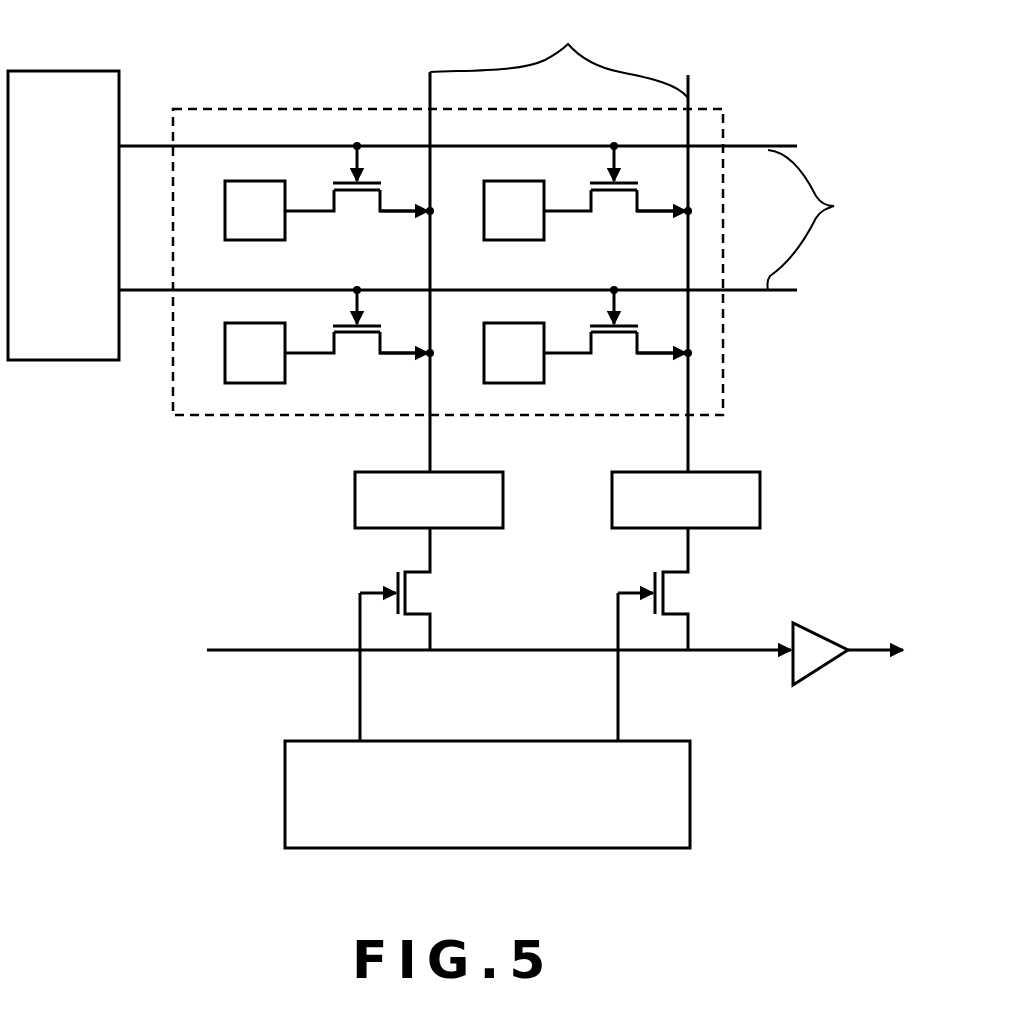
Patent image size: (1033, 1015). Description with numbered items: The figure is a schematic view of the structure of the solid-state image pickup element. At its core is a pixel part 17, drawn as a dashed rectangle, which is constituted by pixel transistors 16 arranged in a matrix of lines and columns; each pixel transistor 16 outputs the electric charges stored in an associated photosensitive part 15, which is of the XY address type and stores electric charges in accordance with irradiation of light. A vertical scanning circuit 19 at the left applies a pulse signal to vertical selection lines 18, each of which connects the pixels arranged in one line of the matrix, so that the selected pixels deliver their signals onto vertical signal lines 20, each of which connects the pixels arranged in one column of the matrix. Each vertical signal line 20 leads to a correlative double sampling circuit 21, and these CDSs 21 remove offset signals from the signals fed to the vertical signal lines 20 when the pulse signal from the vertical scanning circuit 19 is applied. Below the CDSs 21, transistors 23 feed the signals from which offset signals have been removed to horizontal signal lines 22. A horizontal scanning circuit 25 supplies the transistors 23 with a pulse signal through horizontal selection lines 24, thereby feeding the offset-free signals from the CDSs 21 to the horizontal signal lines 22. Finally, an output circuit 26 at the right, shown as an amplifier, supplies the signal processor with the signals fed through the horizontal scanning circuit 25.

The photosensitive part 15 is at (384, 282).
The pixel transistor 16 is at (357, 214).
The pixel part 17 is at (272, 109).
The vertical selection line 18 is at (507, 218).
The vertical scanning circuit 19 is at (62, 71).
The vertical signal line 20 is at (559, 241).
The correlative double sampling circuit 21 is at (355, 487).
The horizontal signal line 22 is at (268, 650).
The transistor 23 is at (413, 585).
The horizontal selection line 24 is at (618, 705).
The horizontal scanning circuit 25 is at (690, 762).
The output circuit 26 is at (815, 638).